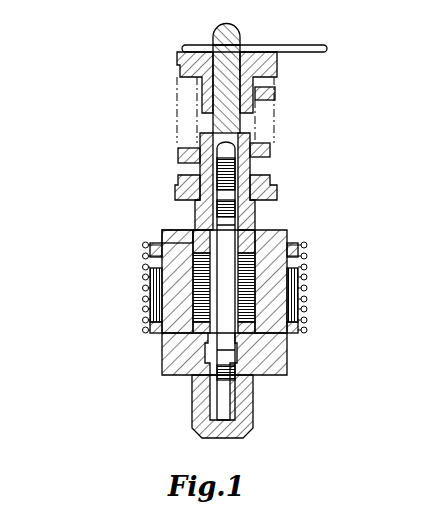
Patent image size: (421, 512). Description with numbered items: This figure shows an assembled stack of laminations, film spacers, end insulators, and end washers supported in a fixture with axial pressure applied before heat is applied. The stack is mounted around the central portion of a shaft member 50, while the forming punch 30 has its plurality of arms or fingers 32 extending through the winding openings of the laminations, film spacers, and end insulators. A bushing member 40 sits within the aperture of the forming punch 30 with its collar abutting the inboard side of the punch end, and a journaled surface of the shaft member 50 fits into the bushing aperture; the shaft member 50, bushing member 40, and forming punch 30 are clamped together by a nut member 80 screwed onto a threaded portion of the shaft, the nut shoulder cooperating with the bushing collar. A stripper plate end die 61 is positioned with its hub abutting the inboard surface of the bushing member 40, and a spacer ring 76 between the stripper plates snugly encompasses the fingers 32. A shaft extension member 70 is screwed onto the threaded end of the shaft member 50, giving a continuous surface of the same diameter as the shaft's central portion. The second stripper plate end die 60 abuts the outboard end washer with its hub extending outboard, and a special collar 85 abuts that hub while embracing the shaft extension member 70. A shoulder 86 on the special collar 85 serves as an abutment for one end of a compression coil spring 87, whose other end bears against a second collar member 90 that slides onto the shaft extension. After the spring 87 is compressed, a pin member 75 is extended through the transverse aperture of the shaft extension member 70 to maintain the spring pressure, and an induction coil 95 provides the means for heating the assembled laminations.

The forming punch 30 is at (170, 375).
The arms or fingers 32 is at (167, 232).
The bushing member 40 is at (242, 353).
The shaft member 50 is at (215, 401).
The stripper plate end die 60 is at (289, 240).
The stripper plate end die 61 is at (296, 333).
The shaft extension member 70 is at (215, 34).
The pin member 75 is at (295, 38).
The spacer ring 76 is at (308, 278).
The nut member 80 is at (253, 407).
The special collar 85 is at (258, 212).
The shoulder 86 is at (176, 191).
The compression coil spring 87 is at (272, 152).
The second collar member 90 is at (278, 62).
The induction coil 95 is at (140, 257).